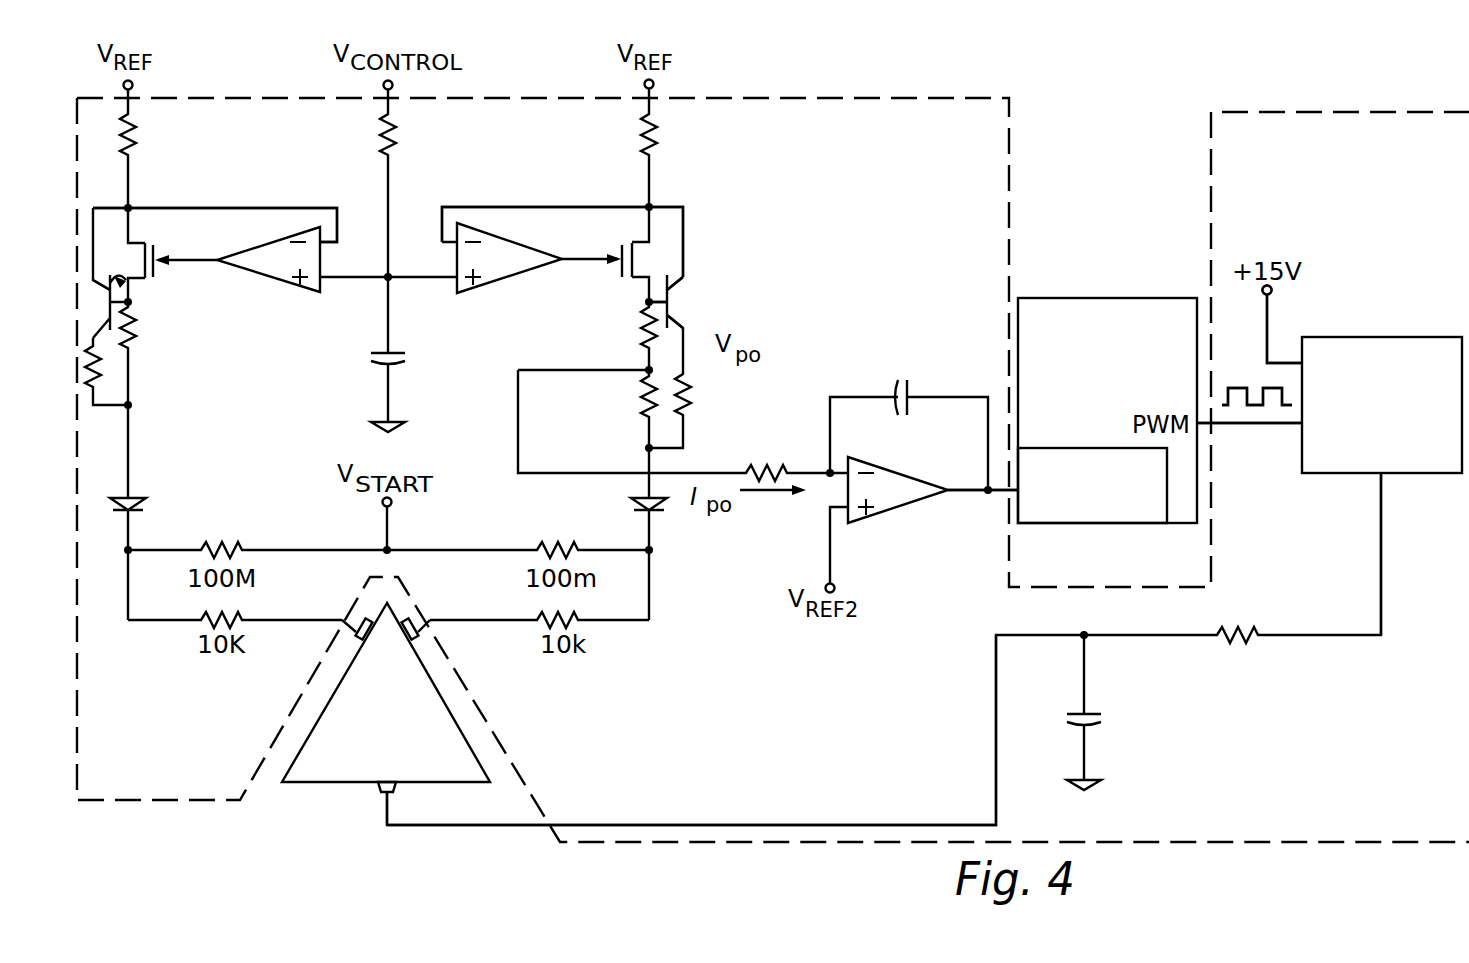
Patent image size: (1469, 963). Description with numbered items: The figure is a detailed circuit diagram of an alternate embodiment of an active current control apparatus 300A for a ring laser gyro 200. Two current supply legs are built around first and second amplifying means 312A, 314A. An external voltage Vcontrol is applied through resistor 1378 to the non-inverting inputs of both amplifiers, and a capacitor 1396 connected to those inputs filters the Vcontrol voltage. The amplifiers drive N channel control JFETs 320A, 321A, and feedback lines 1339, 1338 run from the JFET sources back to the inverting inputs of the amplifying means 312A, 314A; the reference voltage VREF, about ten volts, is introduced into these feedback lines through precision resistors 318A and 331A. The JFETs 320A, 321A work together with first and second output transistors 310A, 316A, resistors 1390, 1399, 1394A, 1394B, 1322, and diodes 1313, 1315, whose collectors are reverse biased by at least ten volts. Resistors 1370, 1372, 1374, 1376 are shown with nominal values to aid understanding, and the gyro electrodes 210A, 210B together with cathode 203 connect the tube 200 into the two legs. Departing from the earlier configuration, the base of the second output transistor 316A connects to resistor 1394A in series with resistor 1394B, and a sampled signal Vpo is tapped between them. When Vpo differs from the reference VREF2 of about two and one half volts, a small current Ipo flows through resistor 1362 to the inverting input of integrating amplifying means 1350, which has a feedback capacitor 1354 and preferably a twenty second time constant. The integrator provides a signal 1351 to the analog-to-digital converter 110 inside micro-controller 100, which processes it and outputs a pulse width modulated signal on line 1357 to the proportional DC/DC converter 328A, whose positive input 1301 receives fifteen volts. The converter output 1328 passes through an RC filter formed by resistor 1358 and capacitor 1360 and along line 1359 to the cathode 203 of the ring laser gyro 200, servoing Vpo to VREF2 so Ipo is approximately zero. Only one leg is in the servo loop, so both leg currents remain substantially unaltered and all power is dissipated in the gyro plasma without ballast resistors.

The active current control apparatus 300A is at (980, 198).
The precision resistor 318A is at (140, 112).
The resistor 1378 is at (398, 114).
The precision resistor 331A is at (660, 113).
The feedback line 1339 is at (243, 208).
The feedback line 1338 is at (501, 207).
The control JFET 320A is at (156, 248).
The control JFET 321A is at (622, 248).
The first amplifying means 312A is at (257, 276).
The second amplifying means 314A is at (490, 308).
The first output transistor 310A is at (120, 288).
The second output transistor 316A is at (686, 290).
The resistor 1399 is at (140, 340).
The resistor 1390 is at (100, 368).
The capacitor 1396 is at (383, 366).
The resistor 1394A is at (640, 330).
The resistor 1394B is at (640, 421).
The resistor 1322 is at (690, 396).
The resistor 1362 is at (775, 471).
The diode 1313 is at (147, 501).
The diode 1315 is at (664, 506).
The resistor 1370 is at (240, 548).
The resistor 1372 is at (537, 550).
The resistor 1374 is at (240, 618).
The resistor 1376 is at (527, 620).
The integrating amplifying means 1350 is at (855, 520).
The feedback capacitor 1354 is at (905, 386).
The signal 1351 is at (964, 492).
The micro-controller 100 is at (1172, 328).
The analog-to-digital converter 110 is at (1100, 524).
The DC/DC converter 328A is at (1416, 460).
The positive input 1301 is at (1268, 338).
The PWM signal line 1357 is at (1231, 423).
The resistor 1358 is at (1235, 632).
The output 1328 is at (1381, 585).
The capacitor 1360 is at (1089, 724).
The line 1359 is at (729, 825).
The ring laser gyro 200 is at (386, 692).
The electrode 210A is at (420, 645).
The electrode 210B is at (355, 645).
The cathode 203 is at (385, 792).